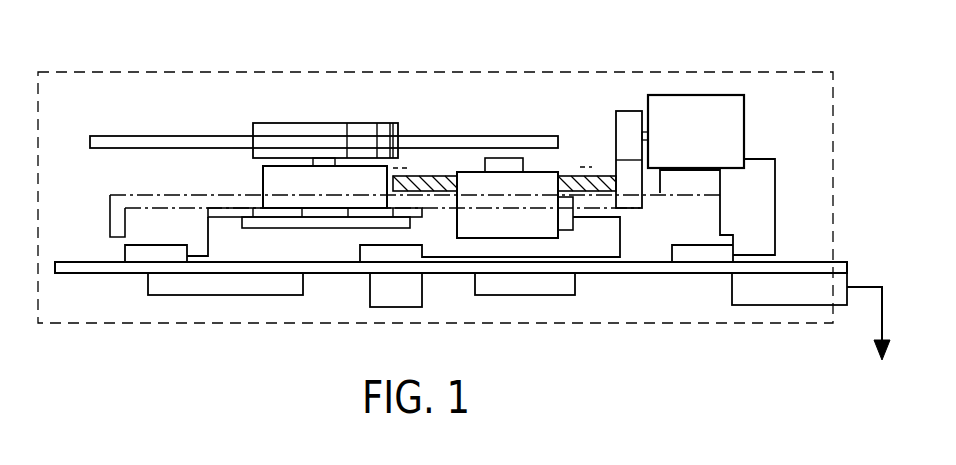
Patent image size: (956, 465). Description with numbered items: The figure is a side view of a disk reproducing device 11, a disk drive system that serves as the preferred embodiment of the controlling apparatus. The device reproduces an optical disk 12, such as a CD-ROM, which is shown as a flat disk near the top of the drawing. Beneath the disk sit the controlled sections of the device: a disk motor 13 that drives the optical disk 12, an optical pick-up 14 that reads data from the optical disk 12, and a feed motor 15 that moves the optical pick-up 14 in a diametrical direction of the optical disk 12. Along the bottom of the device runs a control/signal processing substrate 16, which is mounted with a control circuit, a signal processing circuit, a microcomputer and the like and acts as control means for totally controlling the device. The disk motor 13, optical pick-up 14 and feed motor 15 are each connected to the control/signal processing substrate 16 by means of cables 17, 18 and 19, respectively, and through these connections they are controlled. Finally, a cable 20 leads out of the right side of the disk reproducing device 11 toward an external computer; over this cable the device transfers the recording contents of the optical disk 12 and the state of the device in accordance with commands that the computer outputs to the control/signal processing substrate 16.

The disk reproducing device 11 is at (120, 72).
The optical disk 12 is at (165, 136).
The disk motor 13 is at (263, 178).
The optical pick-up 14 is at (545, 172).
The feed motor 15 is at (744, 140).
The control/signal processing substrate 16 is at (652, 274).
The cable 17 is at (208, 245).
The cable 18 is at (620, 235).
The cable 19 is at (775, 212).
The cable 20 is at (863, 287).